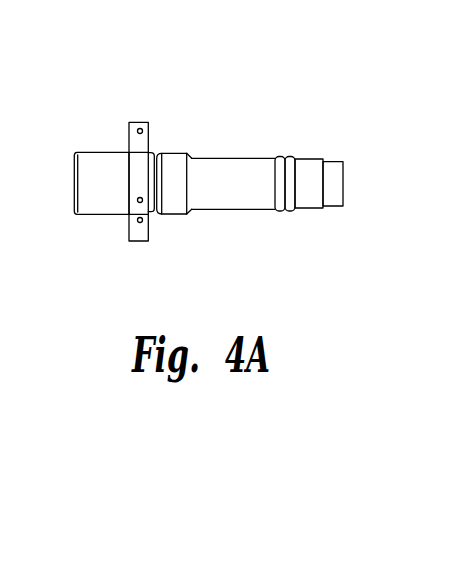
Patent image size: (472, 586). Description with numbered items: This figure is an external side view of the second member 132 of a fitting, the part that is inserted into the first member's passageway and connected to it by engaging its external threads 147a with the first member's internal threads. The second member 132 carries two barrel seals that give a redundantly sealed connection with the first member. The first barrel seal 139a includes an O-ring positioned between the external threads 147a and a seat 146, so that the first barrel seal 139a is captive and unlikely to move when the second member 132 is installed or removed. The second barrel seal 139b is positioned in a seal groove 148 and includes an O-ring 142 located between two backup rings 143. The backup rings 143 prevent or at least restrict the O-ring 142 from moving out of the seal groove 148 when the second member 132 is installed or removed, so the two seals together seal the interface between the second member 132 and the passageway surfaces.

The second member 132 is at (80, 114).
The seat 146 is at (150, 130).
The first barrel seal 139a is at (152, 215).
The second barrel seal 139b is at (281, 132).
The external threads 147a is at (178, 153).
The O-ring 142 is at (290, 157).
The backup rings 143 is at (275, 213).
The seal groove 148 is at (300, 157).